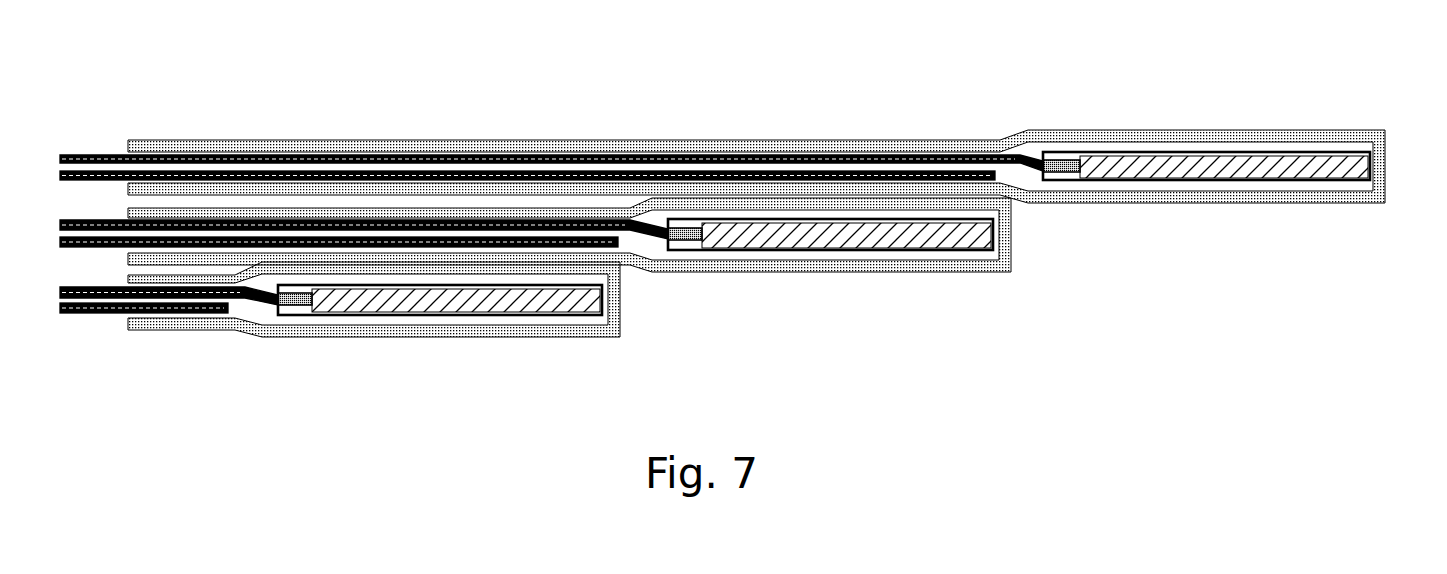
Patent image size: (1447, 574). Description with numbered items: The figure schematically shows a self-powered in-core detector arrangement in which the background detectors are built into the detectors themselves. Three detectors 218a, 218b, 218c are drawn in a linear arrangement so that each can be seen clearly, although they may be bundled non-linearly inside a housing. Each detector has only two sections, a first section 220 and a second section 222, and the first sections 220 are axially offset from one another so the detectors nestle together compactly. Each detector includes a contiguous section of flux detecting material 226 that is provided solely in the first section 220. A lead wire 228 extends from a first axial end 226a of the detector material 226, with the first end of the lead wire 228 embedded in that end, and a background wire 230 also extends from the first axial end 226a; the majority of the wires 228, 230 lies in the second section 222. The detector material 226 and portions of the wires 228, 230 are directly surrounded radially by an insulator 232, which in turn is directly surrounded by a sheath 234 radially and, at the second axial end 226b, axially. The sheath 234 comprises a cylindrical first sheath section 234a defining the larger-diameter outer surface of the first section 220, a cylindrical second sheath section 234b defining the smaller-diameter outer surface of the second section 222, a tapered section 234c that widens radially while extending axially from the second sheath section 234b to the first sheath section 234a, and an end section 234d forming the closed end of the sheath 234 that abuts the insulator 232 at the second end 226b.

The detector 218a is at (1203, 150).
The detector 218b is at (930, 292).
The detector 218c is at (509, 361).
The first section 220 is at (1147, 112).
The second section 222 is at (594, 114).
The flux detecting material 226 is at (1218, 170).
The first axial end of detector material 226a is at (1003, 112).
The second axial end of detector material 226b is at (1390, 227).
The lead wire 228 is at (904, 146).
The background wire 230 is at (818, 158).
The insulator 232 is at (1106, 188).
The sheath 234 is at (1150, 196).
The first sheath section 234a is at (1223, 135).
The second sheath section 234b is at (527, 138).
The tapered section 234c is at (1028, 134).
The end section 234d is at (1392, 147).